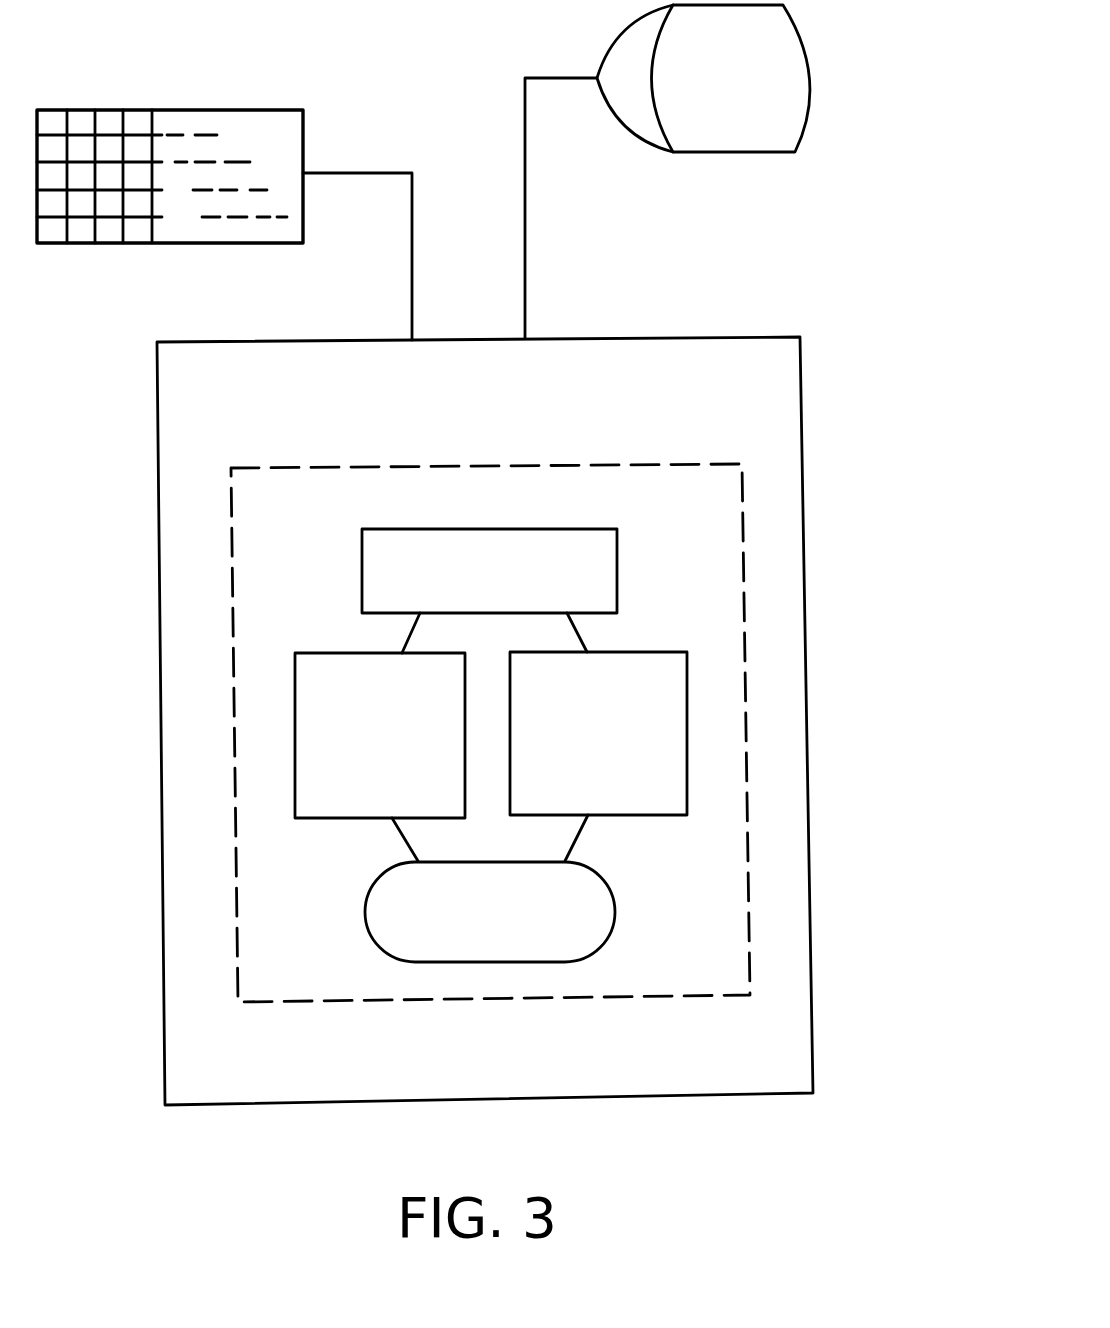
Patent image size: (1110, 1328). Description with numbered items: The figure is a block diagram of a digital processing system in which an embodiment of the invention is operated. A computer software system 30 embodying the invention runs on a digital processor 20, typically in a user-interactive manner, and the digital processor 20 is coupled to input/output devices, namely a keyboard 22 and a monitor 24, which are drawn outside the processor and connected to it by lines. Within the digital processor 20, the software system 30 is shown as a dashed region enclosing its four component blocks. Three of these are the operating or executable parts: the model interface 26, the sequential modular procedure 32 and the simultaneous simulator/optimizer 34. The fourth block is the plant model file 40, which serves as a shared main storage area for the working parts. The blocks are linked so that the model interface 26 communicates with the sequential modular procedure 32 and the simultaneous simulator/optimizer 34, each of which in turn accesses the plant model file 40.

The digital processor 20 is at (802, 487).
The keyboard 22 is at (208, 108).
The monitor 24 is at (813, 50).
The model interface 26 is at (463, 587).
The computer software system 30 is at (225, 559).
The sequential modular procedure 32 is at (355, 750).
The simultaneous simulator/optimizer 34 is at (575, 746).
The plant model file 40 is at (465, 925).